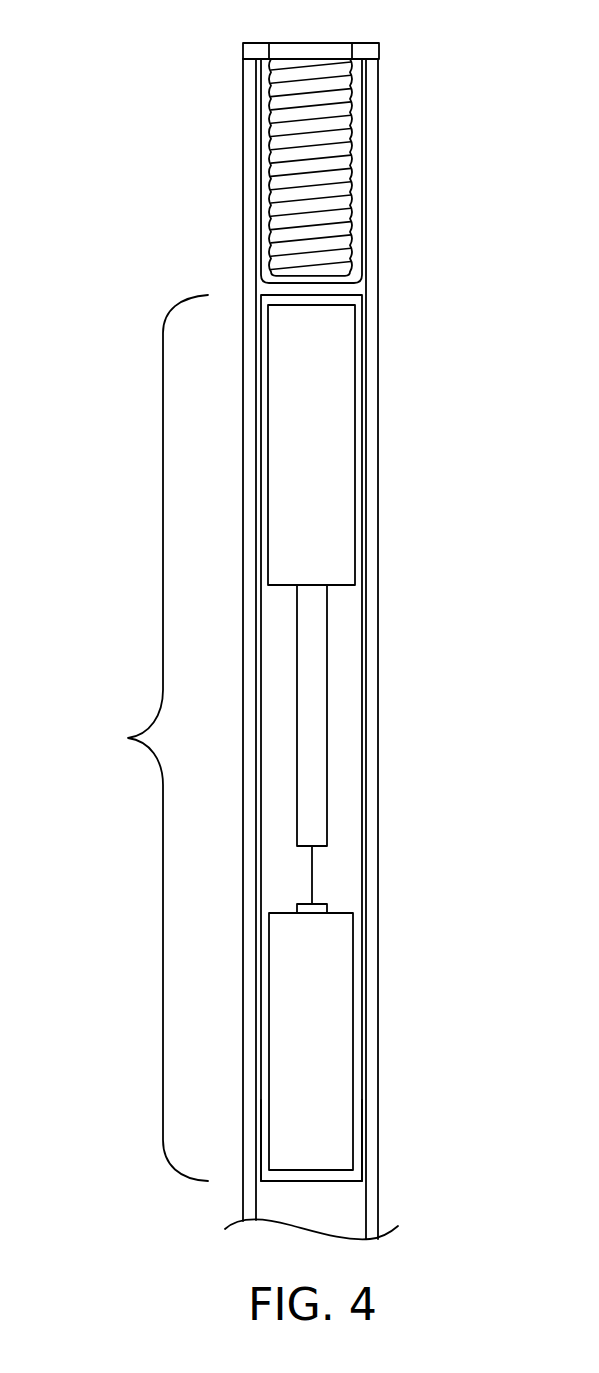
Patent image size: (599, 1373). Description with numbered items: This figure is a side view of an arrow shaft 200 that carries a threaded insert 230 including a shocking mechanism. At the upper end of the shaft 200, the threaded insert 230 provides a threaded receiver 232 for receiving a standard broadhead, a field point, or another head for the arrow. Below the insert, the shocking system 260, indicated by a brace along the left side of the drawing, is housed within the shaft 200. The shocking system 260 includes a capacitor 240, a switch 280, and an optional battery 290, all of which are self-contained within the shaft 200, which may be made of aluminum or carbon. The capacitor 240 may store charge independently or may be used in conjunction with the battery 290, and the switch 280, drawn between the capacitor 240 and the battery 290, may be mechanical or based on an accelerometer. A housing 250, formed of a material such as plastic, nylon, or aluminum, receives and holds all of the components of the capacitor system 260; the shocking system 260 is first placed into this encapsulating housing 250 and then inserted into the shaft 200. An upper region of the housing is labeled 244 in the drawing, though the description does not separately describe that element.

The arrow shaft 200 is at (85, 30).
The threaded insert 230 is at (380, 47).
The threaded receiver 232 is at (358, 174).
The capacitor 240 is at (356, 456).
The housing upper end 244 is at (362, 320).
The housing 250 is at (366, 1173).
The shocking system 260 is at (128, 738).
The switch 280 is at (363, 712).
The battery 290 is at (355, 1010).